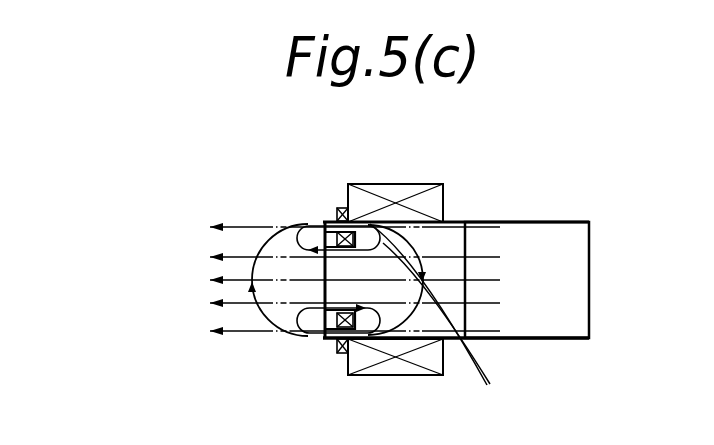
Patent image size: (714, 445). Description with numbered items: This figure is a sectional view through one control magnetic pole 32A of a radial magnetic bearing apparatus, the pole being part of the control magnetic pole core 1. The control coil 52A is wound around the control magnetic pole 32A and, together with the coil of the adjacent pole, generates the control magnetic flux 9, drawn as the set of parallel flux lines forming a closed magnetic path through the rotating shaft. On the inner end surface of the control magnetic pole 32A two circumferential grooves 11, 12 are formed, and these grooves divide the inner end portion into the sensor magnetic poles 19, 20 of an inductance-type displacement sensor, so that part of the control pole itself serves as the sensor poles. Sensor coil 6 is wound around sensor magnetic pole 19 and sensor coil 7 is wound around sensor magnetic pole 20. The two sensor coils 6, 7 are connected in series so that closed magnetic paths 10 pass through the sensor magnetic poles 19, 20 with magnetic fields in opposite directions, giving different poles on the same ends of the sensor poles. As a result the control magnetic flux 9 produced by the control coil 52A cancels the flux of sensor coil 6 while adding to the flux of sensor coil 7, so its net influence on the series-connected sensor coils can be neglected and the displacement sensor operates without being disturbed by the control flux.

The control magnetic pole core 1 is at (590, 258).
The control coil 52A is at (436, 184).
The control magnetic pole 32A is at (455, 293).
The sensor coil 7 is at (338, 208).
The sensor coil 6 is at (342, 354).
The circumferential groove 11 is at (358, 232).
The circumferential groove 12 is at (356, 328).
The sensor magnetic pole 20 is at (323, 222).
The sensor magnetic pole 19 is at (323, 339).
The control magnetic flux 9 is at (187, 218).
The closed magnetic path 10 is at (451, 320).